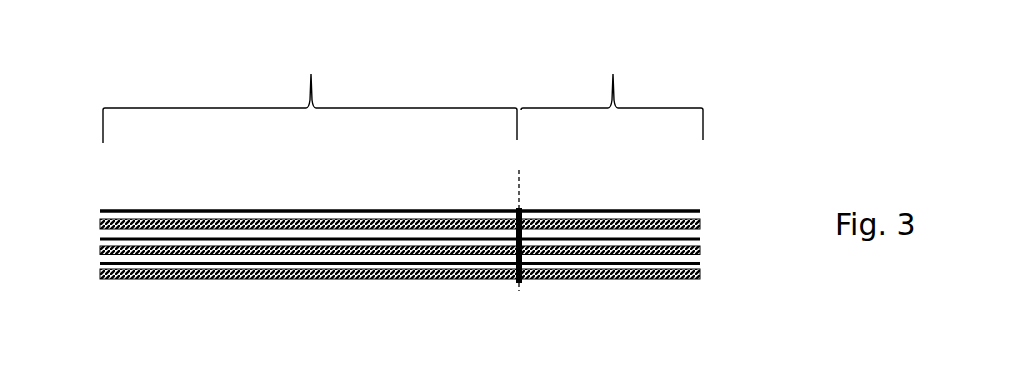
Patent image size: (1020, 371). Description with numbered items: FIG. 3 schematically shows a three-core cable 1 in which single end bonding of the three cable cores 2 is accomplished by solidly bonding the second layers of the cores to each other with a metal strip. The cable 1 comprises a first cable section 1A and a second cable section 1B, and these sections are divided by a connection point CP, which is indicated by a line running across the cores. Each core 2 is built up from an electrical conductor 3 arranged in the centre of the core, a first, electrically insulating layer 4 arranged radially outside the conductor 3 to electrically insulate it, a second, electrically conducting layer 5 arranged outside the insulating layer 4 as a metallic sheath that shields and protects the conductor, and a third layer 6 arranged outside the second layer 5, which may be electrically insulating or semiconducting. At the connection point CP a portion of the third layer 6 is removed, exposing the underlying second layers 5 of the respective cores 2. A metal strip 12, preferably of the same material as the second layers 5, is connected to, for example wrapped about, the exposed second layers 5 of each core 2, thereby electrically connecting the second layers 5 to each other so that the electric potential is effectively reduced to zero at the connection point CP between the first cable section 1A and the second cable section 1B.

The cable 1 is at (770, 77).
The first cable section 1A is at (310, 86).
The second cable section 1B is at (612, 83).
The cable core 2 is at (100, 204).
The electrical conductor 3 is at (582, 208).
The first, electrically insulating layer 4 is at (615, 208).
The second, electrically conducting layer 5 is at (700, 213).
The third layer 6 is at (700, 226).
The metal strip 12 is at (537, 277).
The connection point CP is at (519, 216).